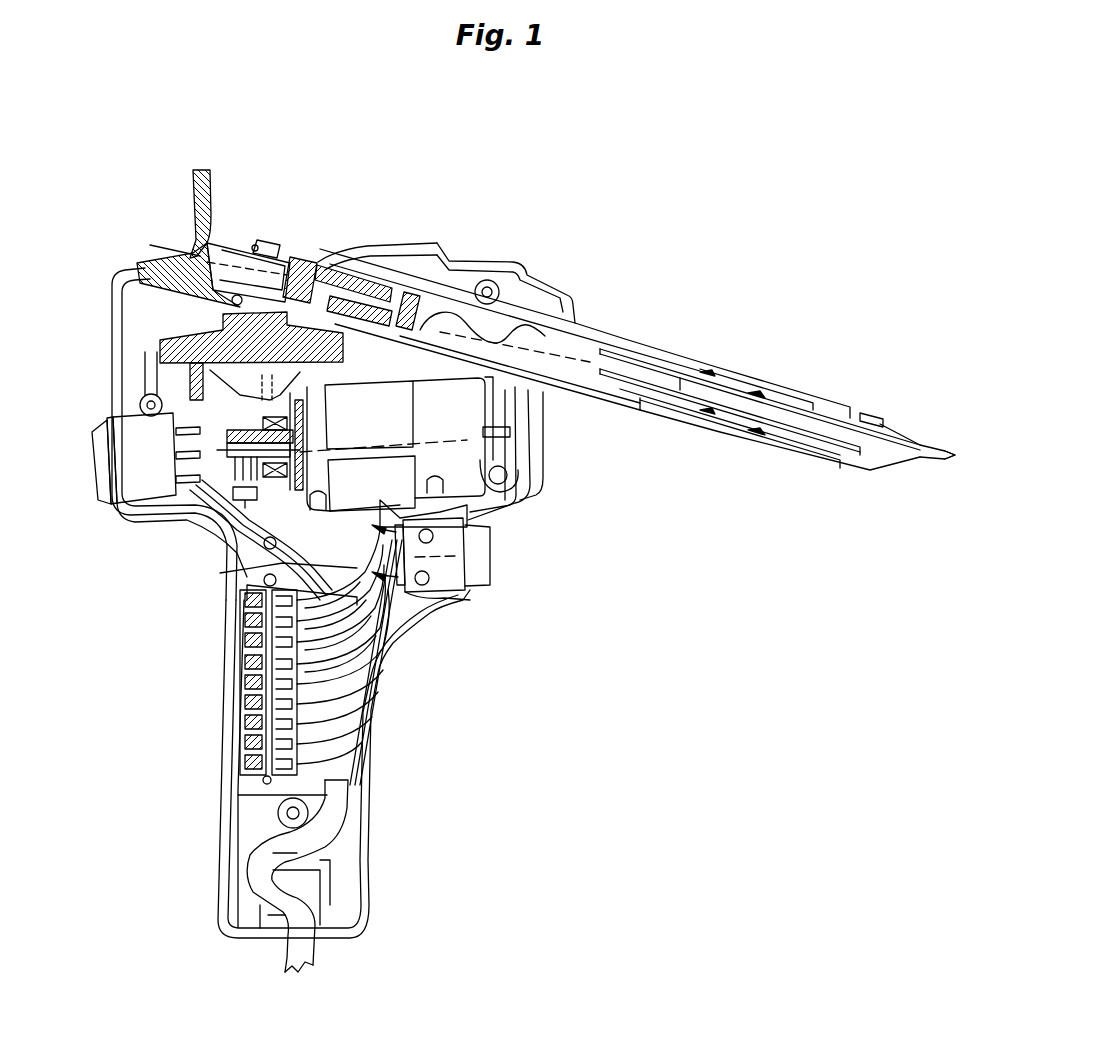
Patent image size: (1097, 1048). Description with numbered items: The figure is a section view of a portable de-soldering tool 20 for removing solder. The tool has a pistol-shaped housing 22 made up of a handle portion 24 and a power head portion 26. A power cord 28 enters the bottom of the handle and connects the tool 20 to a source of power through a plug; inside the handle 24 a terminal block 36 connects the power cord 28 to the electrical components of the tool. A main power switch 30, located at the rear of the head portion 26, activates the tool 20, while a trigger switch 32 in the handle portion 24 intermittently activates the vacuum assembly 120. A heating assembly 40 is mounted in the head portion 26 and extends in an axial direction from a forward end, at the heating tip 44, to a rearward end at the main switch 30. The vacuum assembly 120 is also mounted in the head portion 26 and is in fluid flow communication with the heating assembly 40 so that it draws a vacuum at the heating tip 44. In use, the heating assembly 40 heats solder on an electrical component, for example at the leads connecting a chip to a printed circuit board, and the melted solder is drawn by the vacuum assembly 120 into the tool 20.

The portable de-soldering tool 20 is at (603, 237).
The pistol-shaped housing 22 is at (542, 484).
The handle portion 24 is at (375, 718).
The power head portion 26 is at (413, 240).
The power cord 28 is at (338, 835).
The main power switch 30 is at (104, 480).
The trigger switch 32 is at (487, 568).
The terminal block 36 is at (262, 650).
The heating assembly 40 is at (722, 332).
The heating tip 44 is at (937, 467).
The vacuum assembly 120 is at (327, 520).